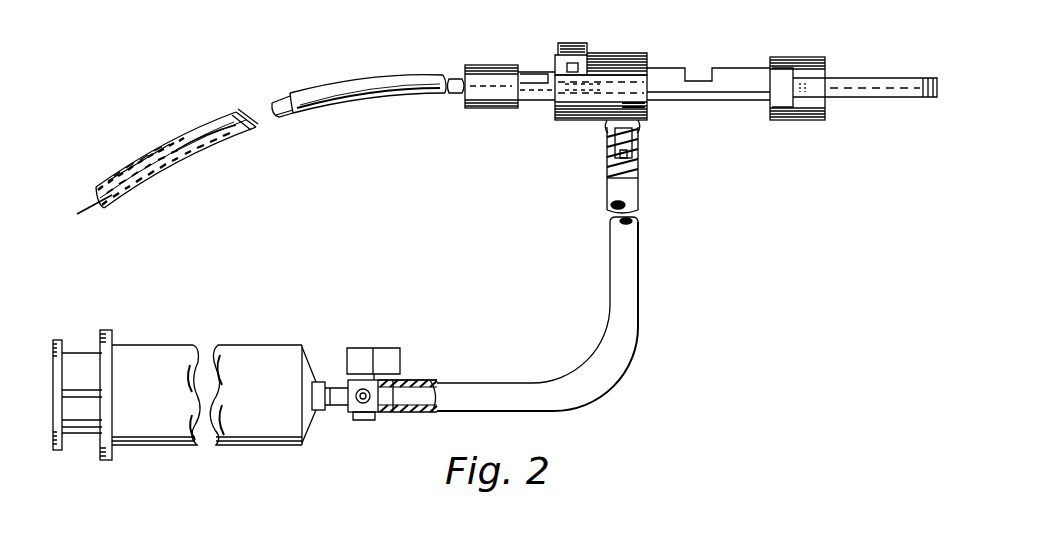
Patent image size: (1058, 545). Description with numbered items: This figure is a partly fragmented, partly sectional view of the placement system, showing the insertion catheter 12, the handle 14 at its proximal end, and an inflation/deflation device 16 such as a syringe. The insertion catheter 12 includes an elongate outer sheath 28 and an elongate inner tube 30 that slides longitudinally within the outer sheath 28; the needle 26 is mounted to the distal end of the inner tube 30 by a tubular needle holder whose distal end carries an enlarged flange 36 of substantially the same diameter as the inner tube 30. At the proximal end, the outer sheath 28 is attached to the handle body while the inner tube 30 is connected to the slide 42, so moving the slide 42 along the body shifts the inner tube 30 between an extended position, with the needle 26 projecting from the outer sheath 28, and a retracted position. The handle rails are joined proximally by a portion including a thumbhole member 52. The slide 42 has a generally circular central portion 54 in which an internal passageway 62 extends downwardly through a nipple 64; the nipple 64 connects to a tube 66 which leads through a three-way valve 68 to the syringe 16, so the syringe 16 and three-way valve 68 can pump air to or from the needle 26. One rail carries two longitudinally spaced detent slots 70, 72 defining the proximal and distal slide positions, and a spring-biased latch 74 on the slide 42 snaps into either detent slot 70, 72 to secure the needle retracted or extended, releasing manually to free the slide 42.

The insertion catheter 12 is at (289, 78).
The handle 14 is at (639, 41).
The inflation/deflation device 16 is at (334, 318).
The needle 26 is at (92, 212).
The outer sheath 28 is at (196, 129).
The inner tube 30 is at (146, 179).
The flange 36 is at (116, 151).
The slide 42 is at (590, 90).
The thumbhole member 52 is at (895, 78).
The central portion 54 is at (618, 82).
The internal passageway 62 is at (648, 108).
The nipple 64 is at (640, 143).
The tube 66 is at (628, 294).
The three-way valve 68 is at (380, 413).
The detent slot 70 is at (695, 79).
The detent slot 72 is at (538, 78).
The latch 74 is at (573, 46).